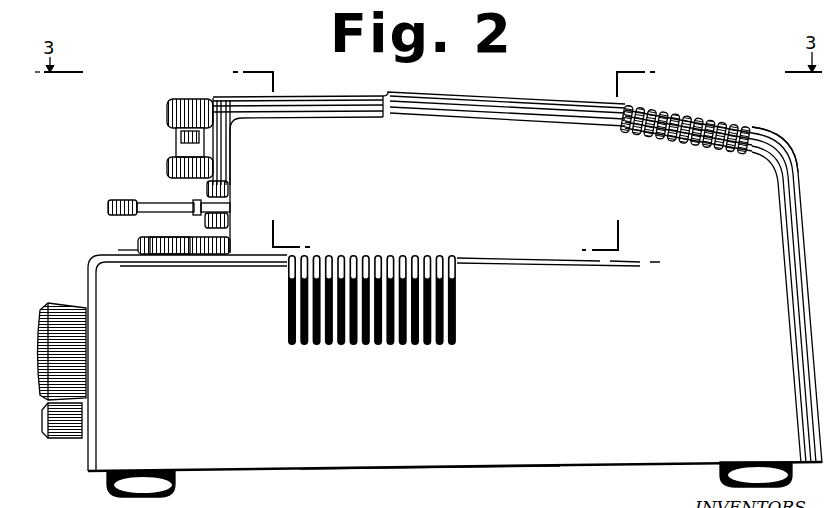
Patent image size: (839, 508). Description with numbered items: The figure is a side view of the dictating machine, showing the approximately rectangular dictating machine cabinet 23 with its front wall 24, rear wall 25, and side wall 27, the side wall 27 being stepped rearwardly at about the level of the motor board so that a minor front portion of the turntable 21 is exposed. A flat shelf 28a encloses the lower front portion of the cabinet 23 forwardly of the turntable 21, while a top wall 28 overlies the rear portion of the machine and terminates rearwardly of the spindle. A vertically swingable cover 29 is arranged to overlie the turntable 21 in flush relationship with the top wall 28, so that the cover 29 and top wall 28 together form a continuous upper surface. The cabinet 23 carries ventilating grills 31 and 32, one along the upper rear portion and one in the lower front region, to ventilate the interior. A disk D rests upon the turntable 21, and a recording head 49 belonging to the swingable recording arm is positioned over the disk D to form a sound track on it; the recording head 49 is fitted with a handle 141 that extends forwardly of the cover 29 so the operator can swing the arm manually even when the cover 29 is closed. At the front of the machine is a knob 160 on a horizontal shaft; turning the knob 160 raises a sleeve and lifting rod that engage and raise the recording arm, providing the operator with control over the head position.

The top wall 28 is at (517, 97).
The ventilating grill 31 is at (682, 118).
The rear wall 25 is at (795, 160).
The cover 29 is at (197, 98).
The recording head 49 is at (207, 188).
The handle 141 is at (122, 198).
The turntable 21 is at (137, 240).
The disk D is at (165, 238).
The flat shelf 28a is at (120, 252).
The front wall 24 is at (88, 275).
The ventilating grill 32 is at (388, 258).
The knob 160 is at (86, 356).
The dictating machine cabinet 23 is at (313, 472).
The side wall 27 is at (400, 460).